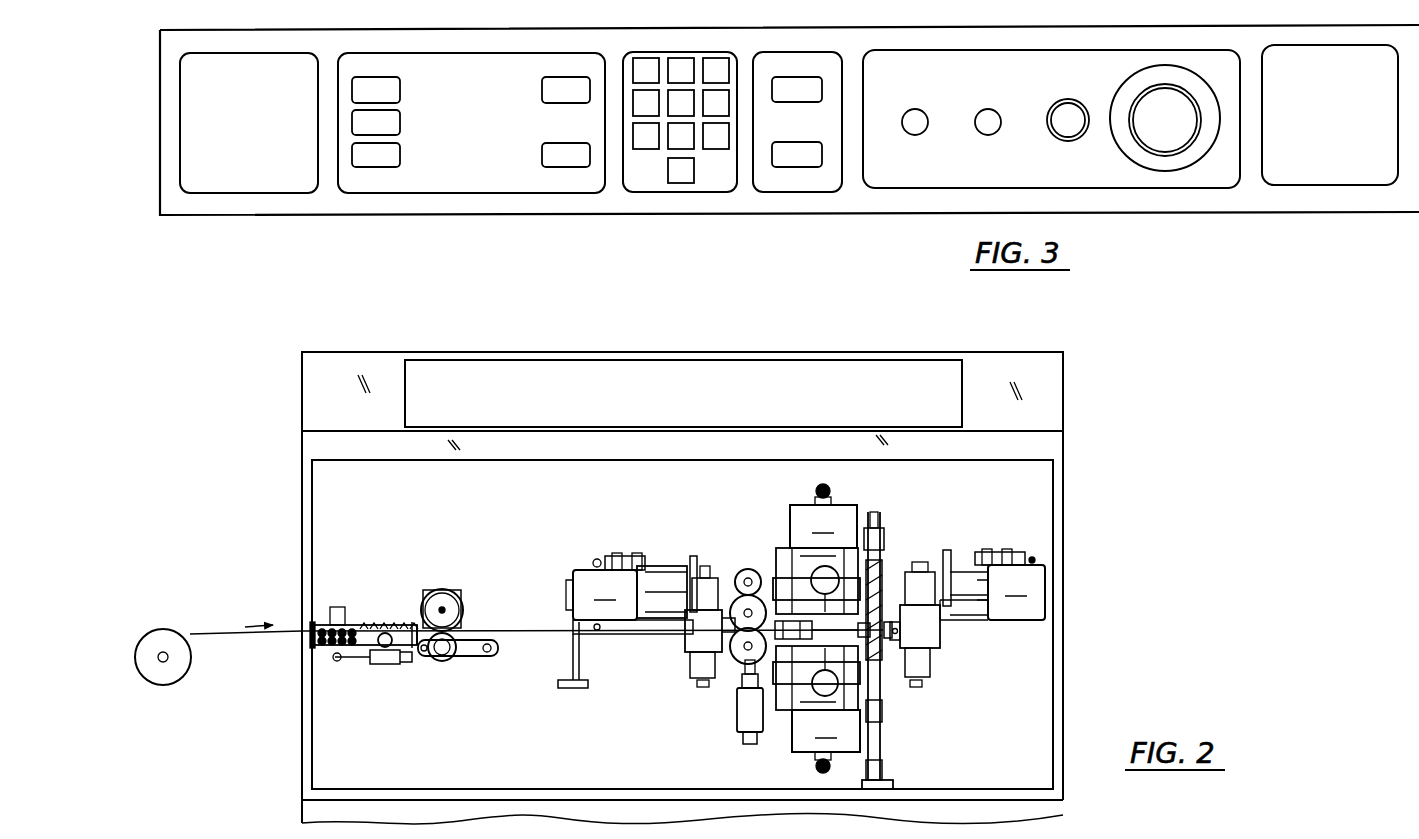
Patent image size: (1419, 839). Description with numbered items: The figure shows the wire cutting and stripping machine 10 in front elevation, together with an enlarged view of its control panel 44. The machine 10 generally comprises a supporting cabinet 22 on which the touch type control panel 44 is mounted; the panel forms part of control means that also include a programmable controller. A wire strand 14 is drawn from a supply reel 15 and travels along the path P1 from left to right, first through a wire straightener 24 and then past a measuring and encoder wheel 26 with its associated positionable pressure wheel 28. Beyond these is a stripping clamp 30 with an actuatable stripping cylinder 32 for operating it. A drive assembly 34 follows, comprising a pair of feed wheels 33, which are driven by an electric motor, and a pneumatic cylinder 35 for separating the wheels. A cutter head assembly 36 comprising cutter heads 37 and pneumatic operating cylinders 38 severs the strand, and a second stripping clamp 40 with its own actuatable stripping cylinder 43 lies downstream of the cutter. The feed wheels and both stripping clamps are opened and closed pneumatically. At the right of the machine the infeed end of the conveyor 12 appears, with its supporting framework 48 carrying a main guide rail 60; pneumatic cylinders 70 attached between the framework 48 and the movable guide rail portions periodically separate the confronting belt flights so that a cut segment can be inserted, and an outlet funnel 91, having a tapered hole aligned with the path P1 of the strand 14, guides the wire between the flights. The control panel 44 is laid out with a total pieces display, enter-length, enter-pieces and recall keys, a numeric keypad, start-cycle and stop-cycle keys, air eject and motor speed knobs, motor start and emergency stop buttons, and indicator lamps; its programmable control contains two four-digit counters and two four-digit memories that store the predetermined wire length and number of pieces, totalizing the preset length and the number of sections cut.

In FIG. 2, the machine 10 is at (702, 569).
In FIG. 2, the conveyor 12 is at (914, 636).
In FIG. 2, the wire strand 14 is at (250, 642).
In FIG. 2, the wire supply spool 15 is at (153, 680).
In FIG. 2, the supporting cabinet 22 is at (302, 497).
In FIG. 2, the wire straightener 24 is at (387, 625).
In FIG. 2, the measuring and encoder wheel 26 is at (442, 589).
In FIG. 2, the positionable pressure wheel 28 is at (443, 662).
In FIG. 2, the stripping clamp 30 is at (690, 642).
In FIG. 2, the stripping cylinder 32 is at (627, 620).
In FIG. 2, the feed wheels 33 is at (740, 596).
In FIG. 2, the drive assembly 34 is at (748, 567).
In FIG. 2, the pneumatic cylinder 35 is at (740, 722).
In FIG. 2, the cutter head assembly 36 is at (801, 631).
In FIG. 2, the cutter heads 37 is at (795, 590).
In FIG. 2, the pneumatic operating cylinders 38 is at (825, 628).
In FIG. 2, the stripping clamp 40 is at (932, 641).
In FIG. 2, the stripping cylinder 43 is at (992, 584).
In FIG. 3, the control panel 44 is at (667, 216).
In FIG. 2, the control panel 44 is at (527, 365).
In FIG. 2, the supporting framework 48 is at (884, 776).
In FIG. 2, the main guide rail 60 is at (880, 660).
In FIG. 2, the pneumatic cylinders 70 is at (884, 732).
In FIG. 2, the outlet funnel 91 is at (886, 580).
In FIG. 2, the path P1 is at (256, 617).